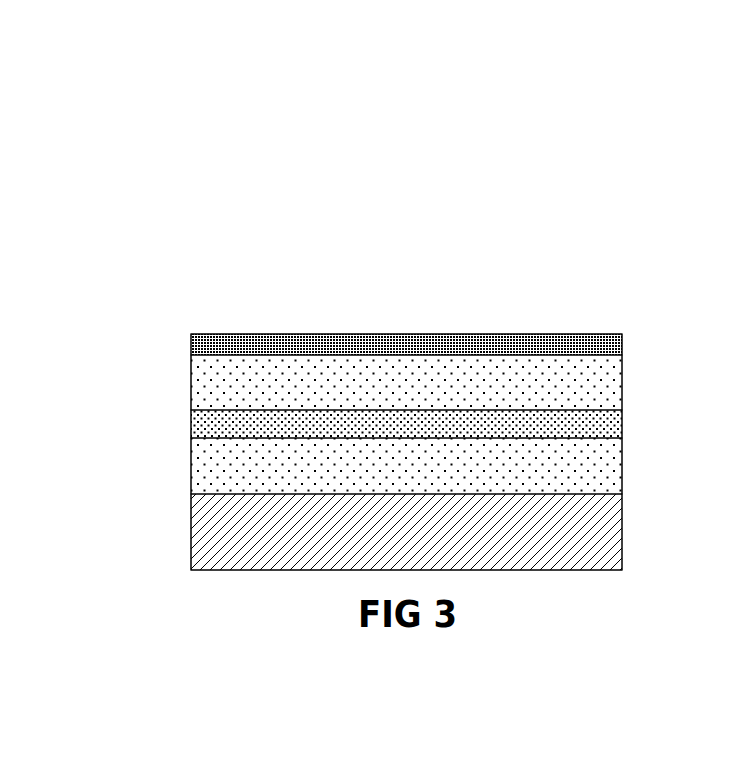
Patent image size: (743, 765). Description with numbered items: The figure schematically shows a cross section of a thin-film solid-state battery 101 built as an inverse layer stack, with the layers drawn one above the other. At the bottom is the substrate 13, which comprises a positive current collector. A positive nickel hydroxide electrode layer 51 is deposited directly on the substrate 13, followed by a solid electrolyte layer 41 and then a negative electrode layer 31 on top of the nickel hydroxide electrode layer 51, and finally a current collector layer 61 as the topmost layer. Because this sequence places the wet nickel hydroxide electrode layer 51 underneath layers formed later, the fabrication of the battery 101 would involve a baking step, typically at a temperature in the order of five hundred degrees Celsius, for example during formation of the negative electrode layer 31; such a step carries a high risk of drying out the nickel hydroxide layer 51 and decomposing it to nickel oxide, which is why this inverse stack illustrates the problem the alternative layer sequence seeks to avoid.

The solid-state battery 101 is at (250, 282).
The current collector layer 61 is at (623, 341).
The negative electrode layer 31 is at (623, 377).
The solid electrolyte layer 41 is at (623, 425).
The Ni(OH)2 electrode layer 51 is at (623, 471).
The substrate 13 is at (623, 530).